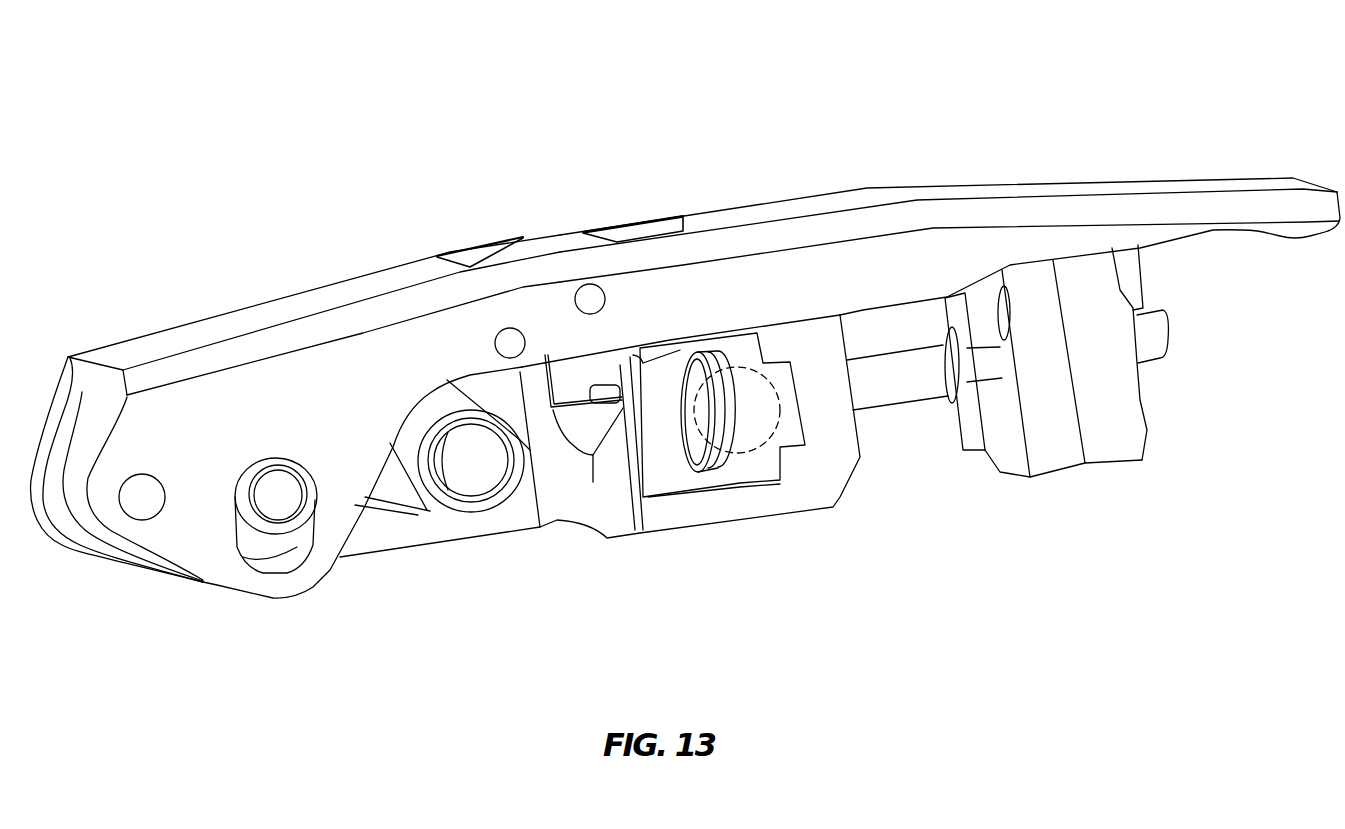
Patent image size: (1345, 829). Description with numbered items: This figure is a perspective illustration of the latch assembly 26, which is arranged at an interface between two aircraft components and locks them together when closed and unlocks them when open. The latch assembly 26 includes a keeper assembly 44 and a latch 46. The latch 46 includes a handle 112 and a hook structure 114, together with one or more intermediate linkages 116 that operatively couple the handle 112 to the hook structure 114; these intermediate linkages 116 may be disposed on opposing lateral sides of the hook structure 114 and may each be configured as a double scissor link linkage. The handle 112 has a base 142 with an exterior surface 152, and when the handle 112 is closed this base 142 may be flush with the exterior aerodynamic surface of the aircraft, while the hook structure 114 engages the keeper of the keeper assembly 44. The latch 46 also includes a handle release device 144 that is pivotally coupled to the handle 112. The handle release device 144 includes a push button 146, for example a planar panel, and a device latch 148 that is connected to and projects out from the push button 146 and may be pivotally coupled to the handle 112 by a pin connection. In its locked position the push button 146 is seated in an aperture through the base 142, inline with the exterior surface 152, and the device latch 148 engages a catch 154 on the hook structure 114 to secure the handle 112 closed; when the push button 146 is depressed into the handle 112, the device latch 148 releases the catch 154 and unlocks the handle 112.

The latch assembly 26 is at (1072, 113).
The latch 46 is at (325, 276).
The push button 146 is at (520, 250).
The handle release device 144 is at (565, 226).
The base 142 is at (950, 201).
The exterior surface 152 is at (950, 201).
The handle 112 is at (783, 210).
The keeper assembly 44 is at (1160, 412).
The hook structure 114 is at (712, 533).
The catch 154 is at (630, 392).
The device latch 148 is at (573, 447).
The intermediate linkage 116 is at (383, 507).